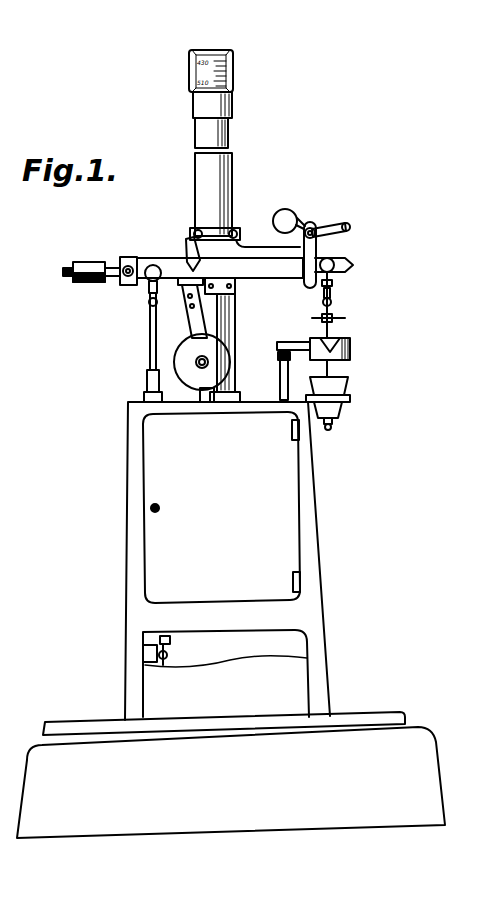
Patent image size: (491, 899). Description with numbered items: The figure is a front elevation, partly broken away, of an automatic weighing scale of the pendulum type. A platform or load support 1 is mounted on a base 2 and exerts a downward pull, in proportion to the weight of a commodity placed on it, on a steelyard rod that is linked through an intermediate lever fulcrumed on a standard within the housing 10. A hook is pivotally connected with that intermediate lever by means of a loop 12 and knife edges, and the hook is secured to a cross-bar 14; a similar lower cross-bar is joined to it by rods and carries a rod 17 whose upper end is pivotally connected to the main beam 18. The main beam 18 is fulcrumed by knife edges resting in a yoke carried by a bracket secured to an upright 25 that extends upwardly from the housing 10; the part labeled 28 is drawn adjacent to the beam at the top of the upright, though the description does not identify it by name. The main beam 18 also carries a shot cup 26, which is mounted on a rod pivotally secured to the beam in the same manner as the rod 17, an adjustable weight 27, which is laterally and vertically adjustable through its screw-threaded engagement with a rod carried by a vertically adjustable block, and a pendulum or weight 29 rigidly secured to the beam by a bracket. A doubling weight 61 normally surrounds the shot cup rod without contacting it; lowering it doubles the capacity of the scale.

The platform or load support 1 is at (393, 711).
The base 2 is at (231, 782).
The housing 10 is at (313, 542).
The loop 12 is at (167, 655).
The cross-bar 14 is at (185, 641).
The rod 17 is at (150, 354).
The main beam 18 is at (283, 276).
The upright 25 is at (235, 292).
The shot cup 26 is at (342, 410).
The adjustable weight 27 is at (87, 284).
The arm 28 is at (227, 271).
The pendulum or weight 29 is at (217, 351).
The doubling weight 61 is at (351, 345).